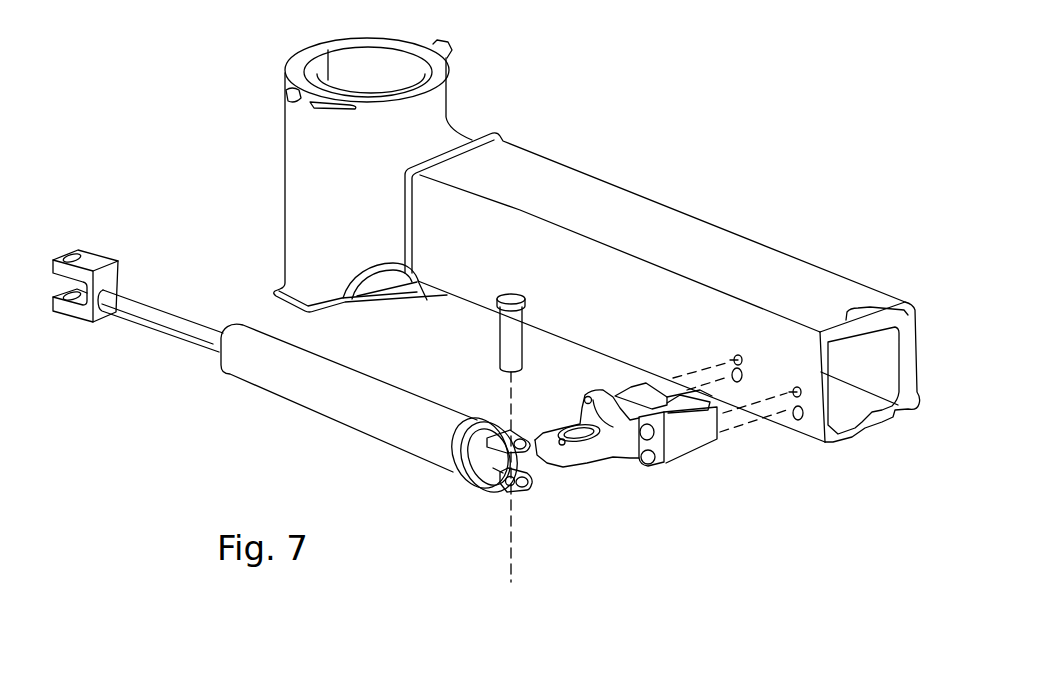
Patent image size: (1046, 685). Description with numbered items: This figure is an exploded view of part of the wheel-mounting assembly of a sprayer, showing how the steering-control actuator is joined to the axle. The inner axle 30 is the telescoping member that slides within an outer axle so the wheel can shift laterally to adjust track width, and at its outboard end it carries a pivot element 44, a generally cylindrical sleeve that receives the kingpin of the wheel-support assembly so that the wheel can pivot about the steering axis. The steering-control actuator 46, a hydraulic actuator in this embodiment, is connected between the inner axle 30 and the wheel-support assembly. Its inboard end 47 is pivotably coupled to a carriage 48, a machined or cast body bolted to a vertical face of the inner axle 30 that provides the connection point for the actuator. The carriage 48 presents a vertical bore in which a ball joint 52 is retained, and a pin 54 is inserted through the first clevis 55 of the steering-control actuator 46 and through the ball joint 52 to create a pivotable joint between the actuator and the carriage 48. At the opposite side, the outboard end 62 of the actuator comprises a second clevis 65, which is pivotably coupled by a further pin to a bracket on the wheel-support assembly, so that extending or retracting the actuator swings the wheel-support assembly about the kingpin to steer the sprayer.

The inner axle 30 is at (668, 207).
The pivot element 44 is at (335, 150).
The steering-control actuator 46 is at (265, 380).
The inboard end 47 is at (445, 460).
The carriage 48 is at (687, 453).
The ball joint 52 is at (592, 442).
The pin 54 is at (513, 343).
The first clevis 55 is at (523, 452).
The outboard end 62 is at (127, 320).
The second clevis 65 is at (100, 258).